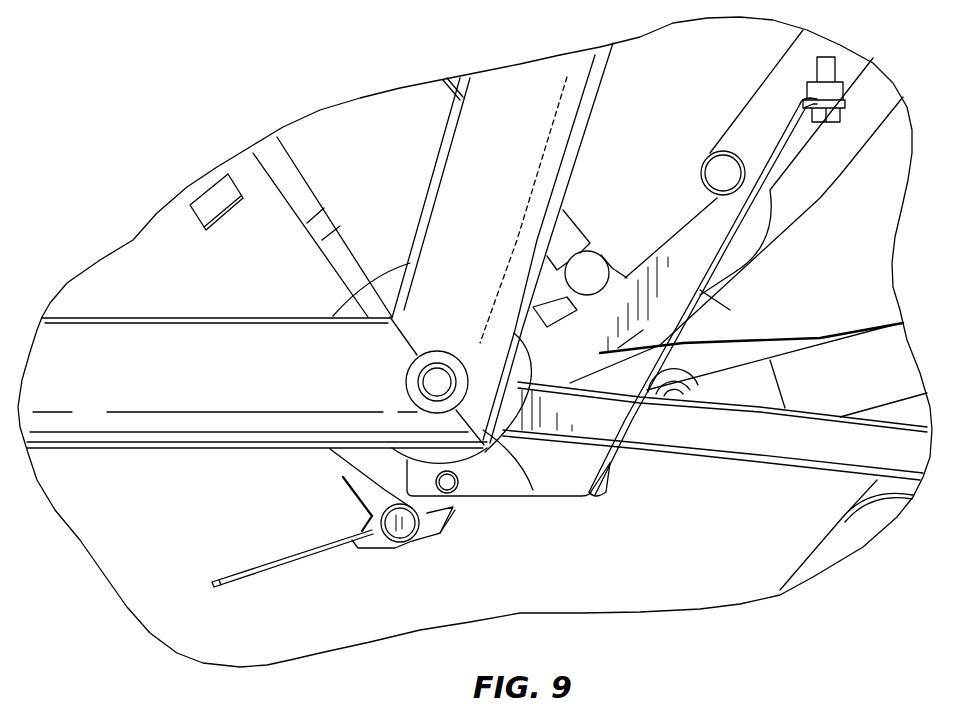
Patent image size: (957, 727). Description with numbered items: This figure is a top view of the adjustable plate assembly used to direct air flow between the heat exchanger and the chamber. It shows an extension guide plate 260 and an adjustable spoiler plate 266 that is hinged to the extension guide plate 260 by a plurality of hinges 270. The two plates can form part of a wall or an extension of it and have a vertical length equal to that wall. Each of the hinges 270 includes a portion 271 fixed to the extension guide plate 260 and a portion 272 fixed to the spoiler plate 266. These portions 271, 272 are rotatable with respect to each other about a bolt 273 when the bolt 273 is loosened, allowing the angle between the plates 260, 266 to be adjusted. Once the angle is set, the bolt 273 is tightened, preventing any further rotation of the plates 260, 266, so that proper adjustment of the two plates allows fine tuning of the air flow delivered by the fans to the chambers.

The extension guide plate 260 is at (628, 468).
The adjustable spoiler plate 266 is at (253, 577).
The hinges 270 is at (430, 526).
The portion fixed to the extension guide plate 271 is at (448, 517).
The portion fixed to the spoiler plate 272 is at (367, 548).
The bolt 273 is at (393, 543).